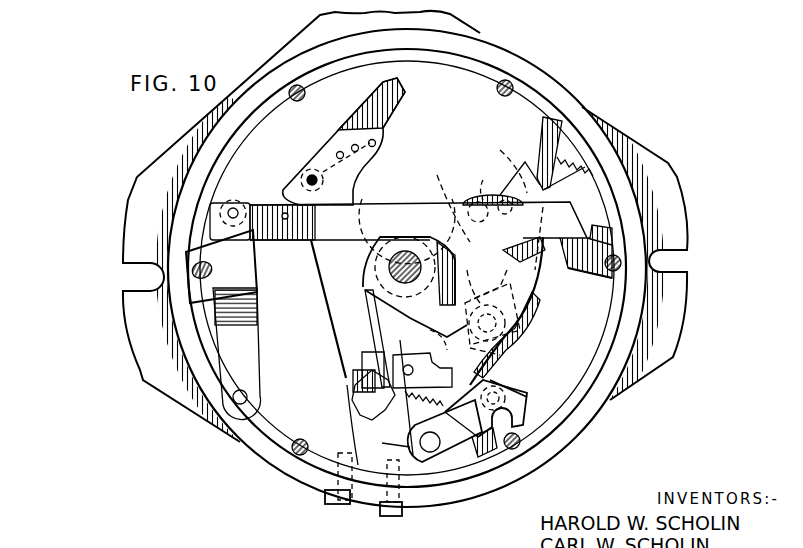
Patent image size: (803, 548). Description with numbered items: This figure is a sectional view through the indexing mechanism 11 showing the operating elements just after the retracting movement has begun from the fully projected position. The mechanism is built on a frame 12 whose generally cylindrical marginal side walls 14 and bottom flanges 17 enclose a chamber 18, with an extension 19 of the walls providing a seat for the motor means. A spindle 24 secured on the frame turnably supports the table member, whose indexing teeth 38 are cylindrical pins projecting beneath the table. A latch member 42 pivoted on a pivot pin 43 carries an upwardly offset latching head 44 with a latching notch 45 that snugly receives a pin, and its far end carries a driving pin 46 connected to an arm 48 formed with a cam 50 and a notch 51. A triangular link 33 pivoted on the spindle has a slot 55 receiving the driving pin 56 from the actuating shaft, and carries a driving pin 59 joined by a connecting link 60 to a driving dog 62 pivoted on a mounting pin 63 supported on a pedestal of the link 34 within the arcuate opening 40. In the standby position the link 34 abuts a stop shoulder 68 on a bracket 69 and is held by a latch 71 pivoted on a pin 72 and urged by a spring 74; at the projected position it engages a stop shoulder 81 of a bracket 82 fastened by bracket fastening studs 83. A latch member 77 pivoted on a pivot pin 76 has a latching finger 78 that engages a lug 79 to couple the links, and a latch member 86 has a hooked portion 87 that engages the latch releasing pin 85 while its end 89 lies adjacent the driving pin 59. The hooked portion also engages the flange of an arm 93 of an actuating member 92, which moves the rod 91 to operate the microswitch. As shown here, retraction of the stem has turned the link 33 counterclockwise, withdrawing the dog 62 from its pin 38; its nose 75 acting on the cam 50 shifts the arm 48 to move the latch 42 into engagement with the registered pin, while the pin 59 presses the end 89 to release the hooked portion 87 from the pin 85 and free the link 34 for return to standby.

The indexing mechanism 11 is at (566, 64).
The frame 12 is at (566, 436).
The marginal side walls 14 is at (263, 83).
The bottom flanges 17 is at (133, 215).
The chamber 18 is at (295, 388).
The extension 19 is at (459, 17).
The spindle 24 is at (388, 266).
The link 33 is at (445, 200).
The link 34 is at (480, 456).
The indexing teeth 38 is at (301, 101).
The arcuate opening 40 is at (580, 245).
The latch member 42 is at (262, 294).
The pivot pin 43 is at (248, 397).
The latching head 44 is at (243, 278).
The latching notch 45 is at (187, 297).
The driving pin 46 is at (233, 208).
The arm 48 is at (377, 211).
The cam 50 is at (522, 315).
The notch 51 is at (533, 258).
The slot 55 is at (470, 203).
The driving pin 56 is at (490, 190).
The driving pin 59 is at (512, 335).
The connecting link 60 is at (510, 358).
The driving dog 62 is at (518, 403).
The mounting pin 63 is at (433, 447).
The stop shoulder 68 is at (588, 278).
The bracket 69 is at (583, 192).
The latch 71 is at (543, 140).
The pin 72 is at (513, 165).
The spring 74 is at (562, 183).
The nose 75 is at (515, 382).
The pivot pin 76 is at (420, 348).
The latch member 77 is at (372, 352).
The latching finger 78 is at (461, 422).
The lug 79 is at (445, 343).
The stop shoulder 81 is at (387, 451).
The bracket 82 is at (348, 440).
The bracket fastening studs 83 is at (336, 505).
The latch releasing pin 85 is at (372, 11).
The latch member 86 is at (416, 313).
The hooked portion 87 is at (355, 399).
The end 89 is at (504, 296).
The rod 91 is at (368, 106).
The actuating member 92 is at (292, 182).
The arm 93 is at (333, 305).